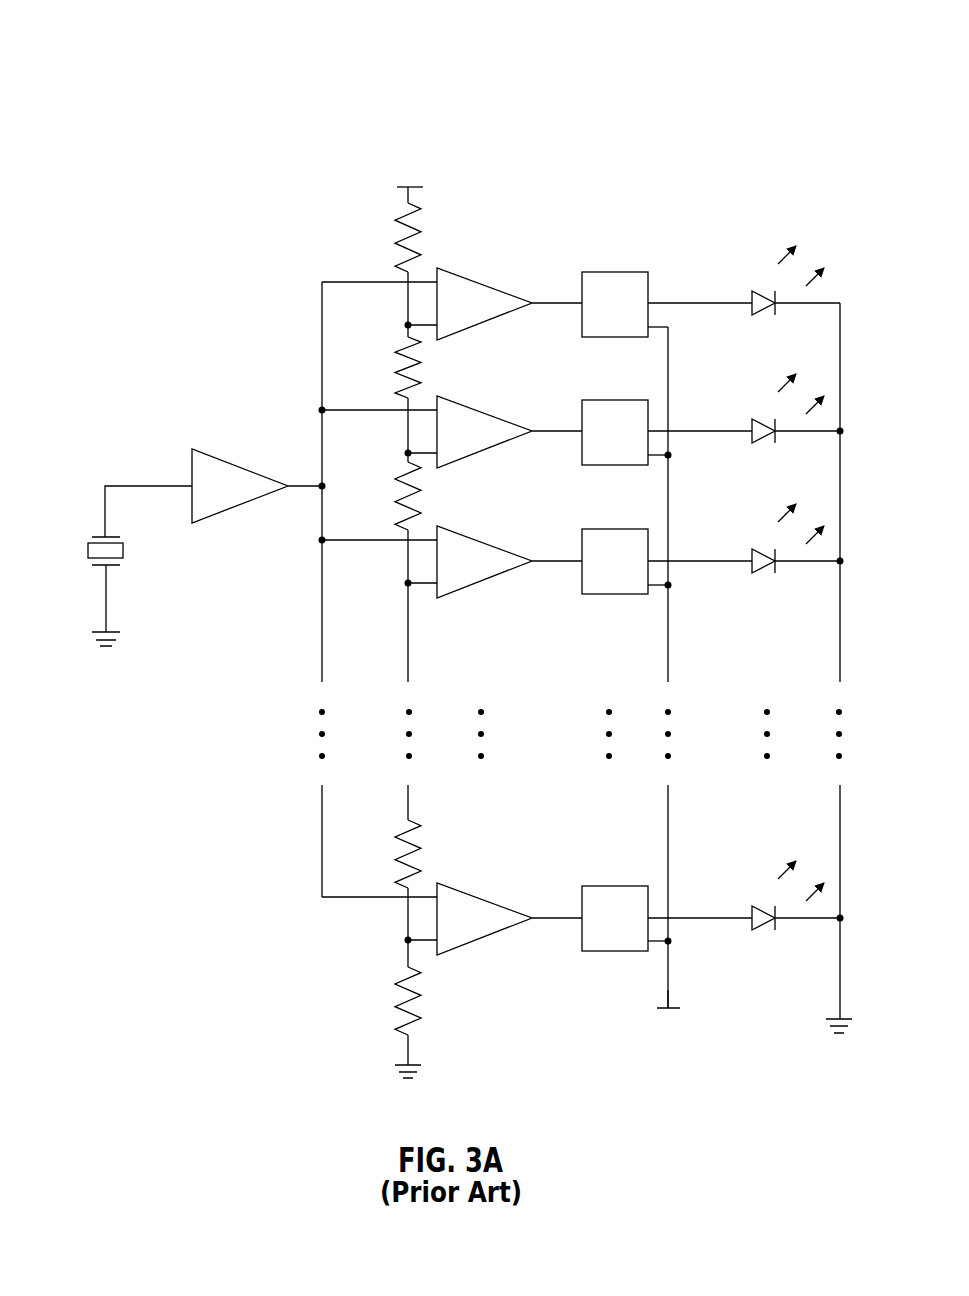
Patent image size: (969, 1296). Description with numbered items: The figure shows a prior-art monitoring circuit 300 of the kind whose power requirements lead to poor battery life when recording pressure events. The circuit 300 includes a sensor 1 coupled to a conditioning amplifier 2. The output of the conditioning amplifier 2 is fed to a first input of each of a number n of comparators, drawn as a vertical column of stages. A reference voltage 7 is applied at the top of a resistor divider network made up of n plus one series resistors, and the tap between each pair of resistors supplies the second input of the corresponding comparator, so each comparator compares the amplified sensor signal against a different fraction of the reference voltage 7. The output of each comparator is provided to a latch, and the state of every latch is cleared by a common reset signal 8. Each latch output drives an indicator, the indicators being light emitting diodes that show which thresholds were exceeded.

The circuit 300 is at (116, 30).
The sensor 1 is at (88, 549).
The conditioning amplifier 2 is at (242, 466).
The reference voltage 7 is at (390, 140).
The reset signal 8 is at (677, 1049).